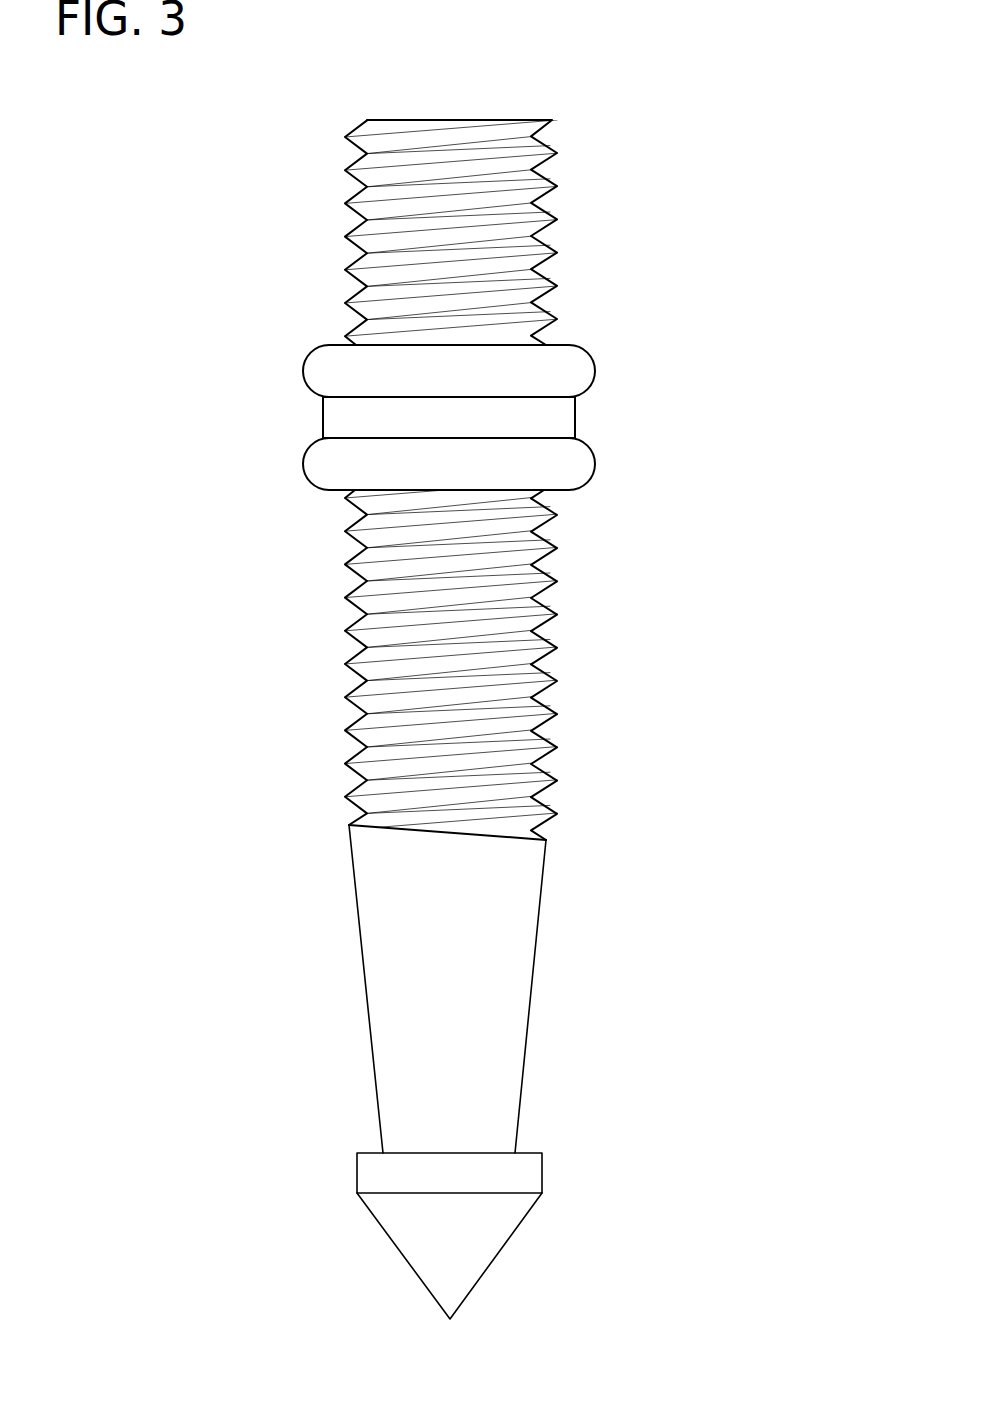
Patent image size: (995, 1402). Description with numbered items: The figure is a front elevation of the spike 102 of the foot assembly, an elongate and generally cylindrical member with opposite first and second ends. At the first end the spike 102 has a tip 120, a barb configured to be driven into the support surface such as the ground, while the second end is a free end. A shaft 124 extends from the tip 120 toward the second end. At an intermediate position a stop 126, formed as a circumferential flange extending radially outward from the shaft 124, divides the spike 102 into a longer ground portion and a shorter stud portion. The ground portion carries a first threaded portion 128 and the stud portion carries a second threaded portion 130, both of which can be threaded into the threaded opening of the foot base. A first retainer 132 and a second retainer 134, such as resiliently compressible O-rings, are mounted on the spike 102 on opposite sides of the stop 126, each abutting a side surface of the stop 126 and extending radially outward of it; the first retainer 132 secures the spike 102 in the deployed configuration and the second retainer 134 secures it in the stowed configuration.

The spike 102 is at (652, 561).
The tip 120 is at (497, 1255).
The shaft 124 is at (517, 950).
The stop 126 is at (562, 418).
The first threaded portion 128 is at (547, 702).
The second threaded portion 130 is at (547, 173).
The first retainer 132 is at (580, 357).
The second retainer 134 is at (583, 463).